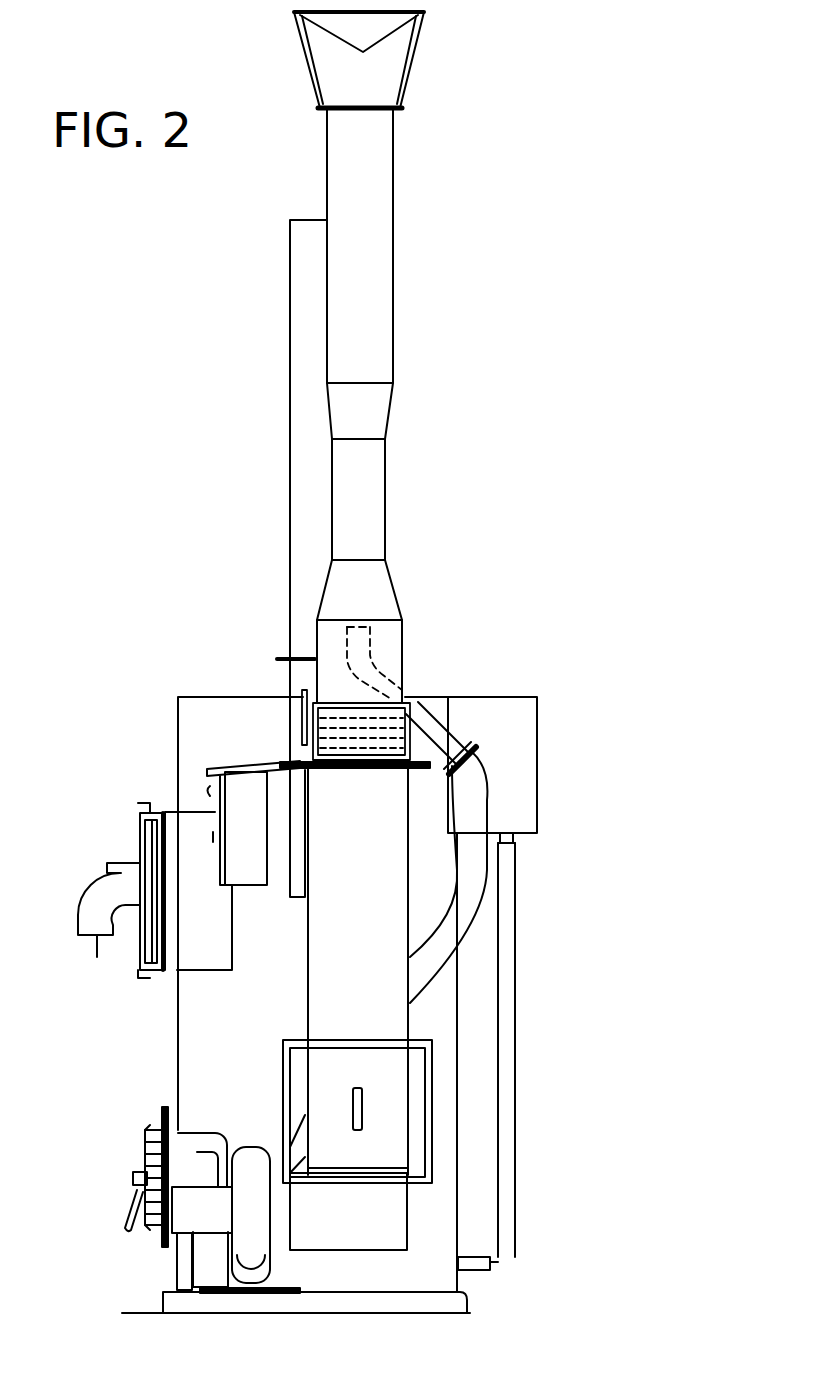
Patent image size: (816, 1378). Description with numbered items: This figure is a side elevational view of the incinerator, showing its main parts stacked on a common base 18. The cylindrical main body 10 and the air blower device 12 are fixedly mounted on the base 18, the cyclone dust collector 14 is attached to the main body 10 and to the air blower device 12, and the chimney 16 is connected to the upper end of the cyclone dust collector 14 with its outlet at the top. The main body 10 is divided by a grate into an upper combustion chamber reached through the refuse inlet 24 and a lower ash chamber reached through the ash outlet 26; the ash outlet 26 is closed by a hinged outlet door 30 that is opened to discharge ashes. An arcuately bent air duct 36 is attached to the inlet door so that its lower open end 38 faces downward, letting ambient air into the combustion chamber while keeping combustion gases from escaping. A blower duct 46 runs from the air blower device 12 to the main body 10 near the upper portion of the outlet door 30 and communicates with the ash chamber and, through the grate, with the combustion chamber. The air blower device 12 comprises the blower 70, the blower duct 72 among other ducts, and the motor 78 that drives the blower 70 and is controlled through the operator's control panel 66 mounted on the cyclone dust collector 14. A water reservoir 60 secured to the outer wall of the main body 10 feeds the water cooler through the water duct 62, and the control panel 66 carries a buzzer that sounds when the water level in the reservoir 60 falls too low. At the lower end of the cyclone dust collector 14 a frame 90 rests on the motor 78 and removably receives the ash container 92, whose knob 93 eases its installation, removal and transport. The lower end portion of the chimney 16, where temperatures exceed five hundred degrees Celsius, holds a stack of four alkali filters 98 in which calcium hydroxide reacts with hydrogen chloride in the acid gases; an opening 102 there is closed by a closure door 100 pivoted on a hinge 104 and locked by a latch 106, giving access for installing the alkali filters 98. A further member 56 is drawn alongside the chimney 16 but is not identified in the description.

The main body 10 is at (140, 1018).
The air blower device 12 is at (145, 1282).
The cyclone dust collector 14 is at (435, 1000).
The chimney 16 is at (413, 375).
The base 18 is at (460, 1303).
The refuse inlet 24 is at (190, 815).
The ash outlet 26 is at (167, 1105).
The outlet door 30 is at (133, 1178).
The air duct 36 is at (93, 905).
The lower open end 38 is at (92, 964).
The blower duct 46 is at (212, 1140).
The support bracket 56 is at (297, 394).
The water reservoir 60 is at (508, 710).
The water duct 62 is at (508, 920).
The operator's control panel 66 is at (242, 780).
The blower 70 is at (240, 1217).
The blower duct 72 is at (470, 873).
The motor 78 is at (398, 1198).
The frame 90 is at (430, 1073).
The ash container 92 is at (403, 1105).
The knob 93 is at (360, 1128).
The alkali filters 98 is at (303, 717).
The closure door 100 is at (342, 700).
The opening 102 is at (373, 710).
The hinge 104 is at (418, 717).
The latch 106 is at (285, 717).